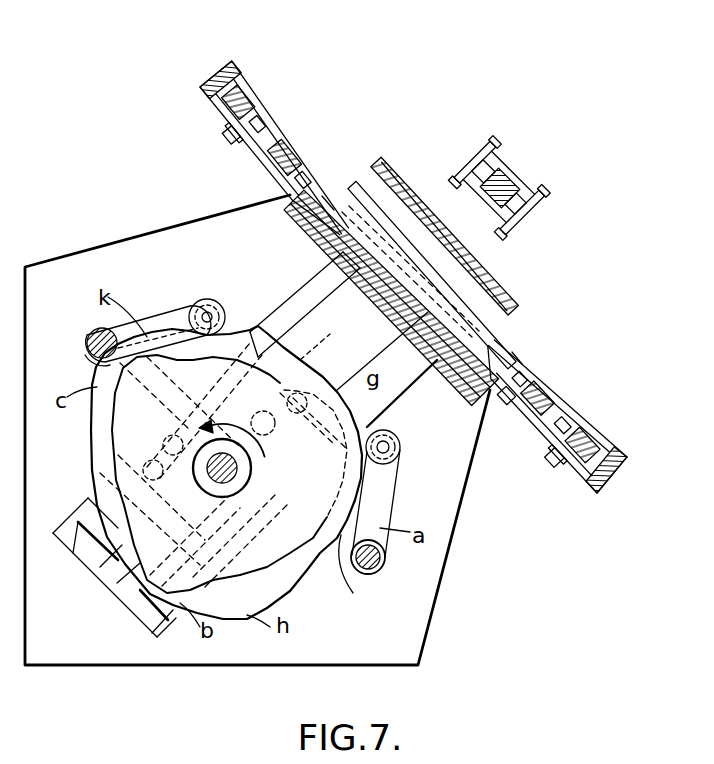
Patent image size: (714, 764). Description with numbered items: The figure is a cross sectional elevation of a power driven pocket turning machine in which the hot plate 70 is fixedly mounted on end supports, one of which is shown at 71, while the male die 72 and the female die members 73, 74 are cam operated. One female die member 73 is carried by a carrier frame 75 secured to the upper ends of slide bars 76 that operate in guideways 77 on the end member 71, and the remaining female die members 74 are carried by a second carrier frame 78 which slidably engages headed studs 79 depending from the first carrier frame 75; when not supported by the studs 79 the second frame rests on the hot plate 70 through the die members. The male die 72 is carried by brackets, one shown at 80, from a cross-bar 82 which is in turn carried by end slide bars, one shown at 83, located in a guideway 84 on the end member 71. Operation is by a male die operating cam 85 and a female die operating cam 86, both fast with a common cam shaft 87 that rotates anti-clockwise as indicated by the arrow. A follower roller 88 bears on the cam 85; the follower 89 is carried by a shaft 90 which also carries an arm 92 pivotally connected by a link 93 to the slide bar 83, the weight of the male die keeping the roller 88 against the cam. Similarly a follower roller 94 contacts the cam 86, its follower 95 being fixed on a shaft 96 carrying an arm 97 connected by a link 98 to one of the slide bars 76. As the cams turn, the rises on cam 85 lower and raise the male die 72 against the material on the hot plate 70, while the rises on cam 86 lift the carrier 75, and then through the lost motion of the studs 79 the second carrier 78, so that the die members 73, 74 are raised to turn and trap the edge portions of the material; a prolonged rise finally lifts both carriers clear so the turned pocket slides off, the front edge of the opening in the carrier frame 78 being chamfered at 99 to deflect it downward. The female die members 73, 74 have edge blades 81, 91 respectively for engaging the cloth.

The hot plate 70 is at (457, 380).
The end support 71 is at (140, 252).
The male die 72 is at (505, 284).
The female die member 73 is at (477, 330).
The female die members 74 is at (322, 182).
The carrier frame 75 is at (252, 78).
The slide bars 76 is at (310, 303).
The guideways 77 is at (83, 538).
The second carrier frame 78 is at (234, 61).
The headed studs 79 is at (222, 134).
The bracket 80 is at (457, 172).
The edge blade 81 is at (517, 335).
The cross-bar 82 is at (507, 178).
The slide bar 83 is at (312, 279).
The guideway 84 is at (115, 575).
The male die operating cam 85 is at (270, 537).
The female die operating cam 86 is at (100, 463).
The cam shaft 87 is at (222, 472).
The follower roller 88 is at (400, 450).
The follower 89 is at (380, 498).
The shaft 90 is at (387, 560).
The edge blade 91 is at (328, 203).
The arm 92 is at (353, 593).
The link 93 is at (287, 344).
The follower roller 94 is at (193, 310).
The follower 95 is at (163, 317).
The shaft 96 is at (87, 330).
The arm 97 is at (95, 364).
The link 98 is at (112, 432).
The chamfer 99 is at (503, 403).